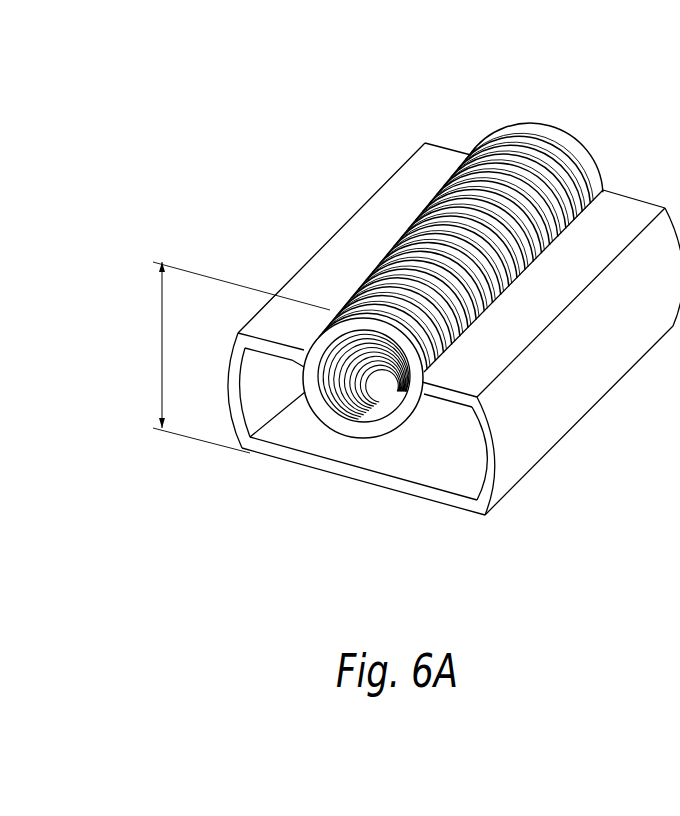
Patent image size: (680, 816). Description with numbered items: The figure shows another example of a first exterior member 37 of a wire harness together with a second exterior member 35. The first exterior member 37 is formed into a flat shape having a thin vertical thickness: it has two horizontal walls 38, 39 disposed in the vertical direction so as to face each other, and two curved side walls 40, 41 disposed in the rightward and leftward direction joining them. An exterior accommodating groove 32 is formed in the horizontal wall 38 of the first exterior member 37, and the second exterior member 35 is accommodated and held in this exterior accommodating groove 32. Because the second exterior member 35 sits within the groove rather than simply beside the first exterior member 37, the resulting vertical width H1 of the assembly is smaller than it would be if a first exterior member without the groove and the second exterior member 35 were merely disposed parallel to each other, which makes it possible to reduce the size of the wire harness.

The second exterior member 35 is at (604, 129).
The exterior accommodating groove 32 is at (353, 428).
The first exterior member 37 is at (394, 187).
The horizontal wall 38 is at (453, 392).
The horizontal wall 39 is at (411, 491).
The curved side wall 40 is at (233, 390).
The curved side wall 41 is at (490, 463).
The vertical width H1 is at (227, 357).